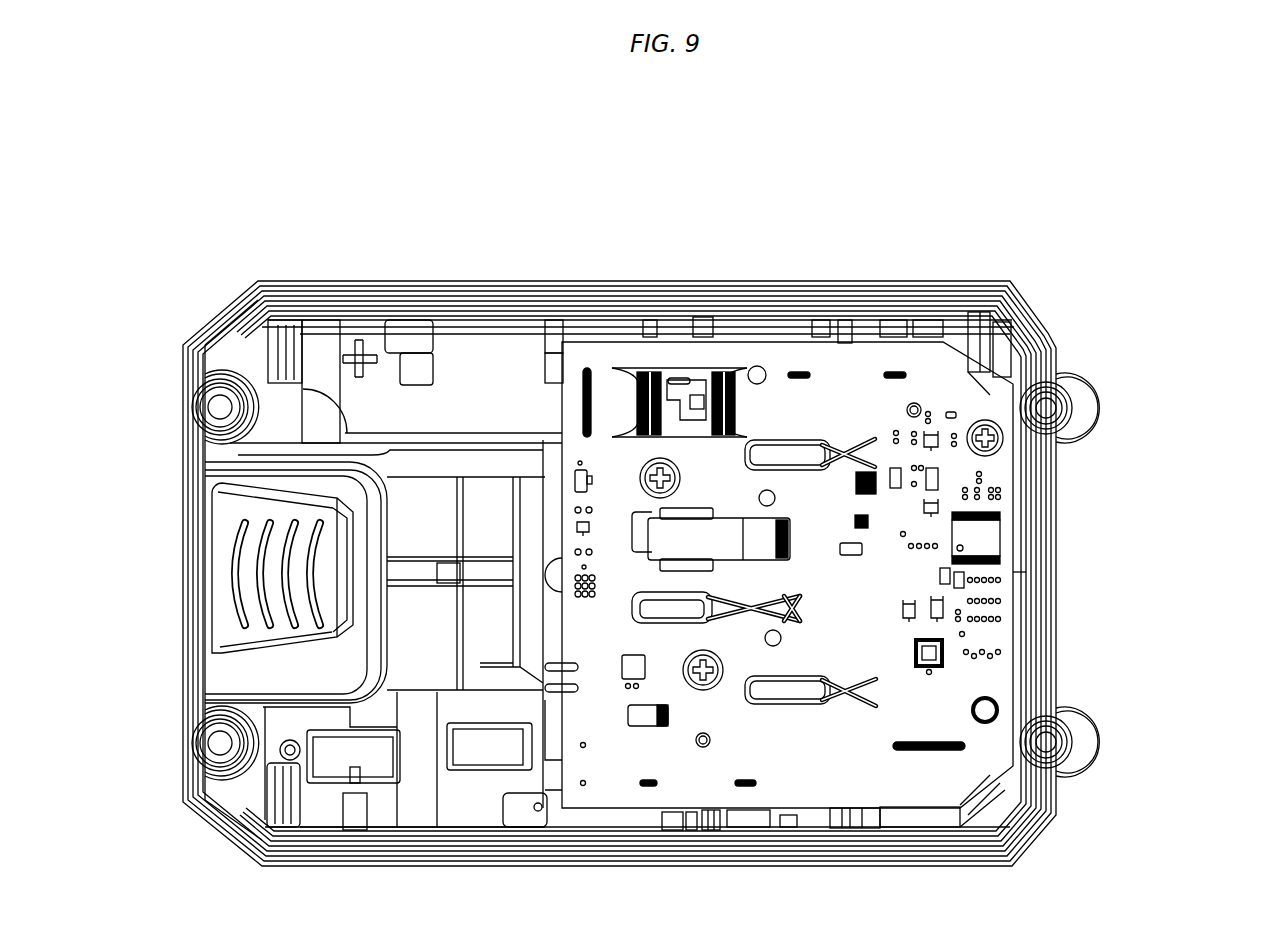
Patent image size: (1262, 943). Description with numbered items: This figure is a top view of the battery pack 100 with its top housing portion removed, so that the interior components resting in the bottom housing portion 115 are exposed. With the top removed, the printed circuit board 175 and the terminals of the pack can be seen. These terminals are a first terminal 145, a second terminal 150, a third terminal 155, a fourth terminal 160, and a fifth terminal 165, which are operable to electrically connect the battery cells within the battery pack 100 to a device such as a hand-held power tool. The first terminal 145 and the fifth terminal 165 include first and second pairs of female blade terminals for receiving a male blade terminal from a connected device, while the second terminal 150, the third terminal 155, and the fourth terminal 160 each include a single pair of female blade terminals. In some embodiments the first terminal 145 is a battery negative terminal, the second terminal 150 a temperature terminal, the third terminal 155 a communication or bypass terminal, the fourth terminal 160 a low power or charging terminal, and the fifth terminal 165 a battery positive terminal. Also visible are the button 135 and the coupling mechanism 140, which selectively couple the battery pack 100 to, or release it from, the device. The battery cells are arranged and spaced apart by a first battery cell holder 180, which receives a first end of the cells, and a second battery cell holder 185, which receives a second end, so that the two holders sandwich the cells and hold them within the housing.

The battery pack 100 is at (1148, 138).
The bottom housing portion 115 is at (190, 822).
The button 135 is at (206, 522).
The coupling mechanism 140 is at (504, 590).
The first terminal 145 is at (772, 712).
The second terminal 150 is at (778, 632).
The third terminal 155 is at (674, 595).
The fourth terminal 160 is at (733, 523).
The fifth terminal 165 is at (877, 435).
The printed circuit board 175 is at (1034, 358).
The first battery cell holder 180 is at (1030, 834).
The second battery cell holder 185 is at (1022, 300).